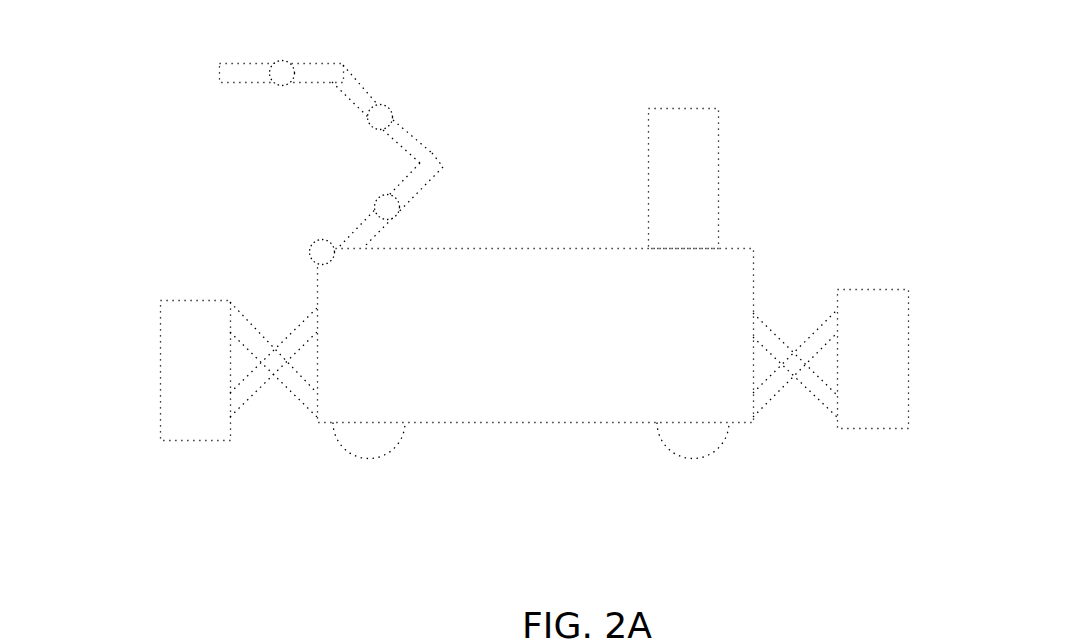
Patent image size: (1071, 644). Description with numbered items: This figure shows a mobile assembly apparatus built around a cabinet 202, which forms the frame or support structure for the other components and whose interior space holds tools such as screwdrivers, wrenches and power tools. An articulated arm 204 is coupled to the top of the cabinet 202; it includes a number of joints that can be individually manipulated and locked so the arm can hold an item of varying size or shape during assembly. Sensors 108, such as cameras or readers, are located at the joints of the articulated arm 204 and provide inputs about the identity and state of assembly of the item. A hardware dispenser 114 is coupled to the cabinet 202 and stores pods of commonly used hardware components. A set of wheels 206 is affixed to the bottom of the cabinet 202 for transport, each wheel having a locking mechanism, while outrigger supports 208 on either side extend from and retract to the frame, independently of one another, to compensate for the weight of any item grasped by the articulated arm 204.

The sensors 108 is at (286, 61).
The hardware dispenser 114 is at (702, 105).
The cabinet 202 is at (533, 415).
The articulated arm 204 is at (428, 168).
The wheels 206 is at (360, 448).
The outrigger supports 208 is at (155, 385).